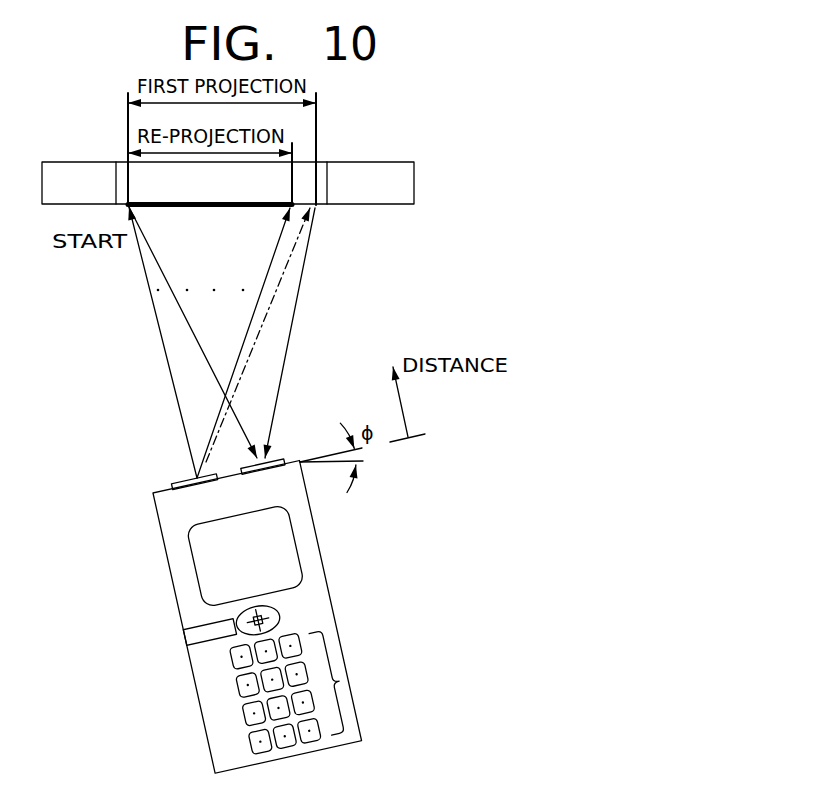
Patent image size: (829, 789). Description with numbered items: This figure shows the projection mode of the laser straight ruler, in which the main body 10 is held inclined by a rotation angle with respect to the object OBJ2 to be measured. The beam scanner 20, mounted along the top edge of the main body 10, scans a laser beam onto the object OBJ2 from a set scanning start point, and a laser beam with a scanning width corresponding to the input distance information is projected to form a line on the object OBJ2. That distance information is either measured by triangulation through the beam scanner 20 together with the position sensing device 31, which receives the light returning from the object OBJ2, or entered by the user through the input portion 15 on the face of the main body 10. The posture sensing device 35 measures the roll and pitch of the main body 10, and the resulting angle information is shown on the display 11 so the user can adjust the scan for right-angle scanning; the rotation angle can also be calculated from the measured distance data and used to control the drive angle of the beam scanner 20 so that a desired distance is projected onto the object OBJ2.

The main body 10 is at (362, 620).
The display 11 is at (302, 545).
The input portion 15 is at (340, 683).
The beam scanner 20 is at (173, 487).
The position sensing device 31 is at (287, 462).
The posture sensing device 35 is at (185, 633).
The object OBJ2 is at (414, 185).